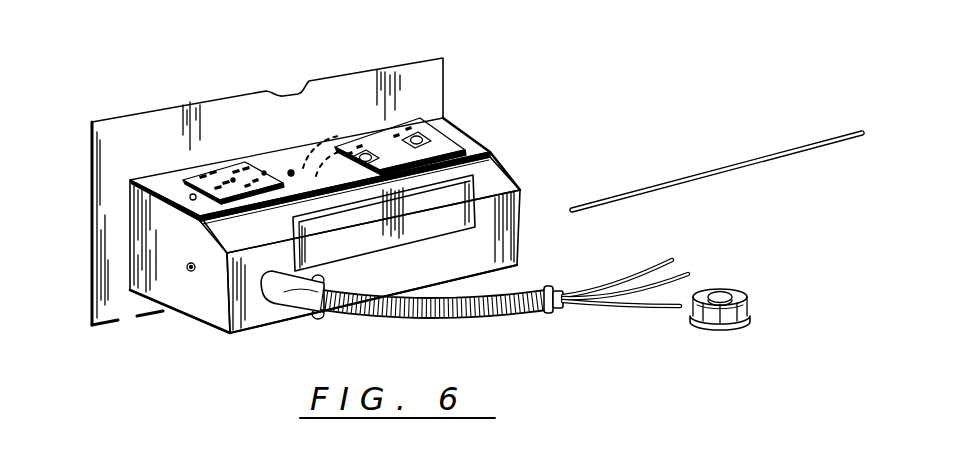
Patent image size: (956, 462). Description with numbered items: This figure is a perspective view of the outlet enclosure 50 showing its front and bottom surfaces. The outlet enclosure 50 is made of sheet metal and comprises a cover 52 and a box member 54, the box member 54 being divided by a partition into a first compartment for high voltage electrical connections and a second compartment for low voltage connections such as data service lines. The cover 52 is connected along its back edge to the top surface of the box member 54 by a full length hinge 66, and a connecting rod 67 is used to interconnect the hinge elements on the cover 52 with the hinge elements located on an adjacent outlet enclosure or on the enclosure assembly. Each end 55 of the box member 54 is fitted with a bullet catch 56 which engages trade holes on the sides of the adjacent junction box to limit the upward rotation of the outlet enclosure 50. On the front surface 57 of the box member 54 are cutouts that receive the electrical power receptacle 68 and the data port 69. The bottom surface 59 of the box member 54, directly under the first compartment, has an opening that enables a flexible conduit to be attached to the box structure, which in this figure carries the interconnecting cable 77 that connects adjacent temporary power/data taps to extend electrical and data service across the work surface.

The outlet enclosure 50 is at (170, 78).
The cover 52 is at (442, 58).
The box member 54 is at (487, 143).
The end 55 is at (162, 238).
The bullet catch 56 is at (189, 274).
The front surface 57 is at (467, 140).
The bottom surface 59 is at (505, 247).
The hinge 66 is at (118, 323).
The connecting rod 67 is at (693, 178).
The electrical power receptacle 68 is at (200, 178).
The data port 69 is at (385, 137).
The interconnecting cable 77 is at (518, 316).